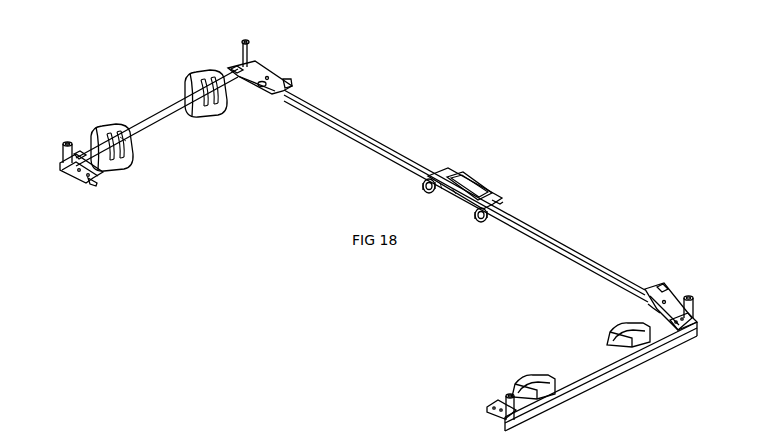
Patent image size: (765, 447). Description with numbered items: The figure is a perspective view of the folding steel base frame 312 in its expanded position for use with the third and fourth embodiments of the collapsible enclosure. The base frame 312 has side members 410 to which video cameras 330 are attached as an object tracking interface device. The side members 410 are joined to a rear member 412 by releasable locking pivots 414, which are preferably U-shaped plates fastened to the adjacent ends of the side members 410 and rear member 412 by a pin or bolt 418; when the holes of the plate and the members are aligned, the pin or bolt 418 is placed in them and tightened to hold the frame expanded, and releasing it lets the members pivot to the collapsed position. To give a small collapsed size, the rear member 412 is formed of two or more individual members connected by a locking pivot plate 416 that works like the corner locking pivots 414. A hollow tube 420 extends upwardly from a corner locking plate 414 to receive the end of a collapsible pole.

The folding steel base frame 312 is at (553, 193).
The video cameras 330 is at (190, 72).
The side members 410 is at (84, 147).
The rear member 412 is at (346, 111).
The releasable locking pivots 414 is at (266, 56).
The locking pivot plate 416 is at (461, 166).
The pin or bolt 418 is at (663, 284).
The hollow tube 420 is at (701, 292).